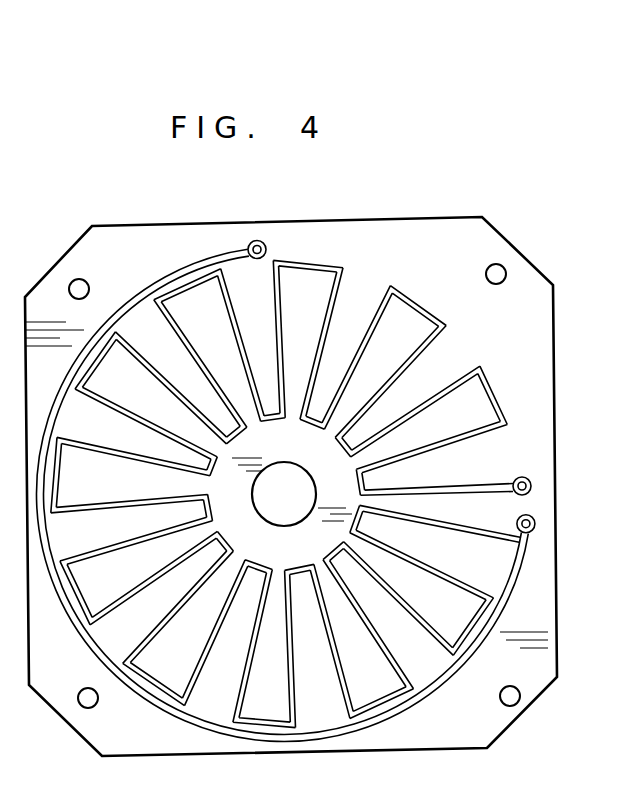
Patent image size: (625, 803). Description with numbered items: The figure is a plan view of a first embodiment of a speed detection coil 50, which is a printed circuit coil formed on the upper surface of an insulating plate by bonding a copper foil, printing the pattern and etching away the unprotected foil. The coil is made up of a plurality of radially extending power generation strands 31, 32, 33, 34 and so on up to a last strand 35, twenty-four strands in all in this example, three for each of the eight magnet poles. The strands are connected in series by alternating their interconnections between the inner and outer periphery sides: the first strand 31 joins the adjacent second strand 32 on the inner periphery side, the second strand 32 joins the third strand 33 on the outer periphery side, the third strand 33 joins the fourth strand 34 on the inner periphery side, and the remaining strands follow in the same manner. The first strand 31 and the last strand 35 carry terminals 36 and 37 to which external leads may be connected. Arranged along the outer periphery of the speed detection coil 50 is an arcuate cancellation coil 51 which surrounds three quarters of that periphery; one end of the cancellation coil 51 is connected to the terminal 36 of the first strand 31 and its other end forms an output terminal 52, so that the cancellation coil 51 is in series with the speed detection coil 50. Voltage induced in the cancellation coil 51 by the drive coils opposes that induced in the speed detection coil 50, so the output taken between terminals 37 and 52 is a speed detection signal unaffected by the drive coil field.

The first power generation strand 31 is at (450, 529).
The second power generation strand 32 is at (436, 573).
The third power generation strand 33 is at (406, 599).
The fourth power generation strand 34 is at (377, 631).
The last power generation strand 35 is at (458, 483).
The terminal 36 is at (535, 525).
The terminal 37 is at (531, 486).
The speed detection coil 50 is at (446, 322).
The cancellation coil 51 is at (350, 737).
The output terminal 52 is at (256, 240).